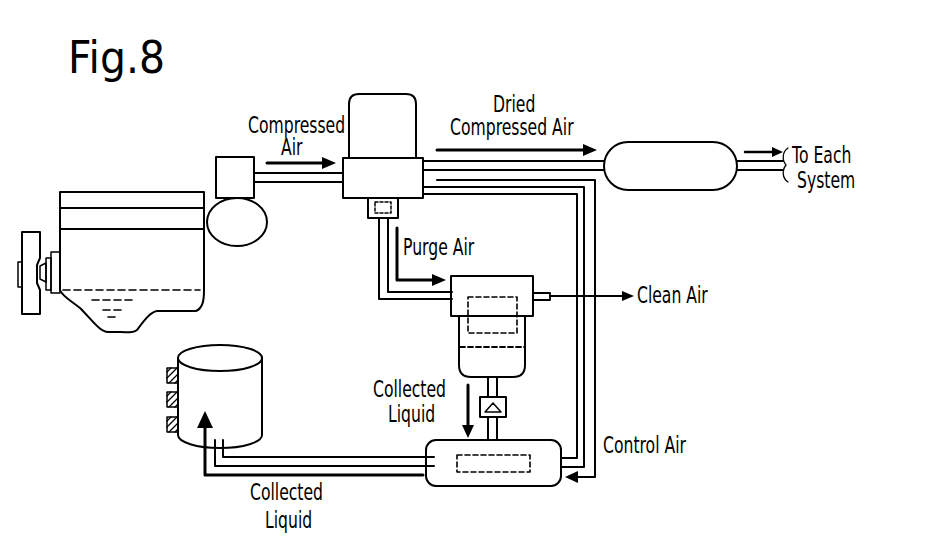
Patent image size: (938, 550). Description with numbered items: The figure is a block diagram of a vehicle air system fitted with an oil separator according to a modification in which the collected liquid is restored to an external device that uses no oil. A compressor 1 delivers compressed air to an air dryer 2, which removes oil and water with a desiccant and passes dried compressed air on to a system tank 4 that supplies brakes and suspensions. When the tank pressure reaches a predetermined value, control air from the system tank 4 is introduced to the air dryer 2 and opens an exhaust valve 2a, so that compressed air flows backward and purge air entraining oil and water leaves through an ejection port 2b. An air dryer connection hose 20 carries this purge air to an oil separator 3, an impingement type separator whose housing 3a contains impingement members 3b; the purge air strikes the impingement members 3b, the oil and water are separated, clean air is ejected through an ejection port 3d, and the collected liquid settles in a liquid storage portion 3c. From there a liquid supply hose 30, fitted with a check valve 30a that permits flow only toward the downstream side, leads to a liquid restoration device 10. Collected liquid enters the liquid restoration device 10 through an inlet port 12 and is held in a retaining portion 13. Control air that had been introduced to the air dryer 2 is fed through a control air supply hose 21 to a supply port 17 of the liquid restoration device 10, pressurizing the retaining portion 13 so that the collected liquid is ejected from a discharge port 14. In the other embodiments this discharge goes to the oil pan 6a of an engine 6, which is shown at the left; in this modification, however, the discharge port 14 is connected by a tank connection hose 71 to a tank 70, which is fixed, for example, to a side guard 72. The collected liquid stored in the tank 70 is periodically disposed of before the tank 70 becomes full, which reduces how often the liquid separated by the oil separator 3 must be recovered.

The compressor 1 is at (230, 157).
The air dryer 2 is at (418, 123).
The exhaust valve 2a is at (375, 208).
The ejection port 2b is at (398, 215).
The oil separator 3 is at (485, 302).
The housing 3a is at (459, 332).
The impingement members 3b is at (502, 297).
The liquid storage portion 3c is at (460, 374).
The ejection port 3d is at (546, 302).
The system tank 4 is at (691, 142).
The engine 6 is at (129, 192).
The oil pan 6a is at (160, 312).
The liquid restoration device 10 is at (471, 459).
The inlet port 12 is at (502, 440).
The retaining portion 13 is at (470, 473).
The discharge port 14 is at (425, 456).
The supply port 17 is at (565, 476).
The air dryer connection hose 20 is at (378, 253).
The control air supply hose 21 is at (576, 205).
The liquid supply hose 30 is at (500, 380).
The check valve 30a is at (506, 412).
The tank 70 is at (263, 411).
The tank connection hose 71 is at (329, 457).
The side guard 72 is at (166, 425).